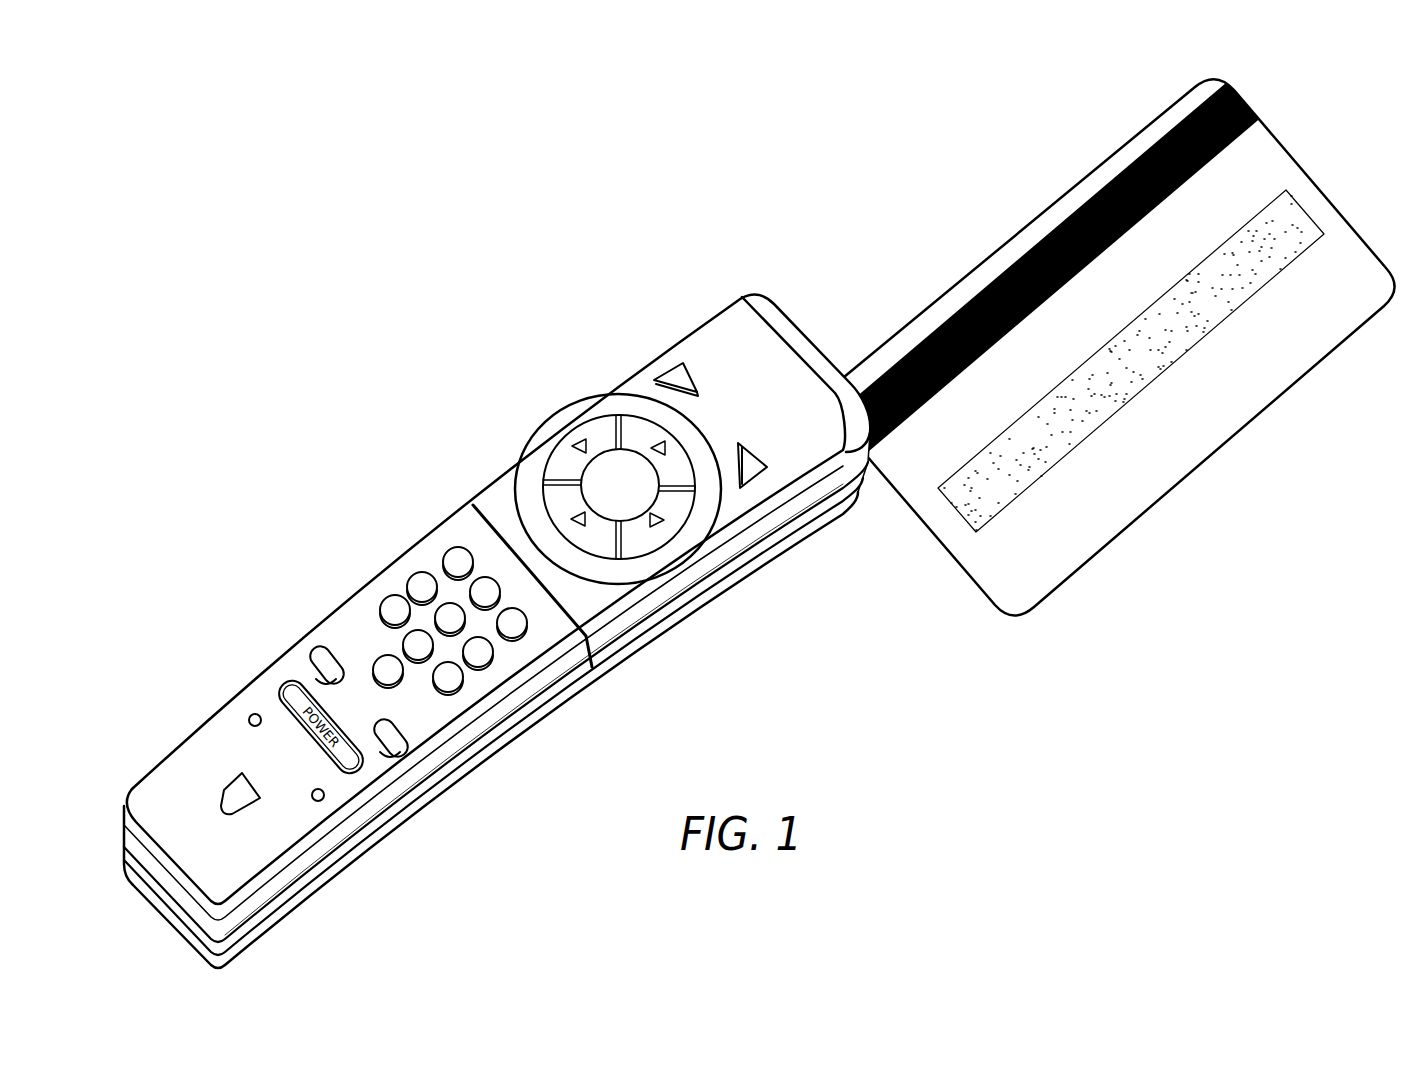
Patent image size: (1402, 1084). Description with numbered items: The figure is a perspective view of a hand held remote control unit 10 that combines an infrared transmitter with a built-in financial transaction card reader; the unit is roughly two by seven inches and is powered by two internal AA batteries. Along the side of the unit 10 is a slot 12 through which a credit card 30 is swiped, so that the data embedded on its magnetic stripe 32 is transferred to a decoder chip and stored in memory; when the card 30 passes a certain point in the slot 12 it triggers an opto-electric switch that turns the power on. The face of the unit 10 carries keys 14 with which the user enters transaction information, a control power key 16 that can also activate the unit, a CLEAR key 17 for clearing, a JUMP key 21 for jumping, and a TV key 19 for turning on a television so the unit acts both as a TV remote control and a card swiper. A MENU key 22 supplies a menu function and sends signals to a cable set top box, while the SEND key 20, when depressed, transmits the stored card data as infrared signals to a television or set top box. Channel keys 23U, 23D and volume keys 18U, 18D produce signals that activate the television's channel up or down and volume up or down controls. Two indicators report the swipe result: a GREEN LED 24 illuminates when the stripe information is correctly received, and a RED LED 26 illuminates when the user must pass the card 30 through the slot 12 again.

The remote control unit 10 is at (272, 665).
The slot 12 is at (803, 510).
The keys 14 is at (513, 655).
The control power key 16 is at (407, 762).
The CLEAR key 17 is at (320, 646).
The volume key 18U is at (688, 543).
The volume key 18D is at (557, 437).
The TV key 19 is at (410, 748).
The SEND key 20 is at (672, 368).
The JUMP key 21 is at (223, 795).
The MENU key 22 is at (770, 468).
The channel key 23U is at (680, 475).
The channel key 23D is at (607, 540).
The GREEN LED 24 is at (322, 800).
The RED LED 26 is at (250, 716).
The credit card 30 is at (1310, 173).
The magnetic stripe 32 is at (1250, 104).